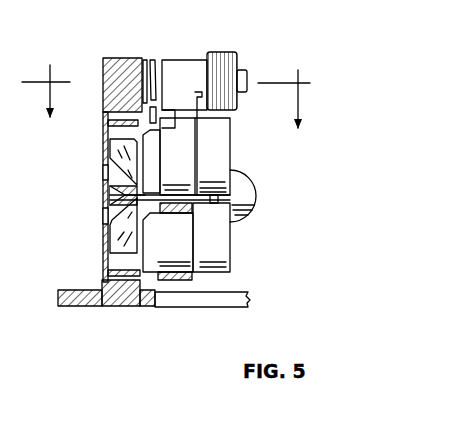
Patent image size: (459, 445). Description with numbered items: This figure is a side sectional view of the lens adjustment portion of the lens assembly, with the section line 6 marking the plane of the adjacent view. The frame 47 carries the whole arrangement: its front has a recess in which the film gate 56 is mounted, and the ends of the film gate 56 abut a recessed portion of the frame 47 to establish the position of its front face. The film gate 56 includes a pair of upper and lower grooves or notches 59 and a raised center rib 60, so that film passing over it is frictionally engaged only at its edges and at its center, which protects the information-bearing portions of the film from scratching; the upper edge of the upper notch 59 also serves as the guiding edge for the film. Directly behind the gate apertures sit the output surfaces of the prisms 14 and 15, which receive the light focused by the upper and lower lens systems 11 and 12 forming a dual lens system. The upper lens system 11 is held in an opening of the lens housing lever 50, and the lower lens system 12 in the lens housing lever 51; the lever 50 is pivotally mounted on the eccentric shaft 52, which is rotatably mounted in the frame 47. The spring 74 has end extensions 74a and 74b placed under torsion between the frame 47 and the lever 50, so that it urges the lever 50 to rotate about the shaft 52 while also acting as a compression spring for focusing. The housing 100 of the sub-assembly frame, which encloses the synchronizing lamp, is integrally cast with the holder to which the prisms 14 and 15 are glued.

The section line 6- 6 is at (173, 96).
The frame 47 is at (102, 58).
The film gate 56 is at (103, 128).
The prism 14 is at (112, 162).
The prism 15 is at (112, 231).
The raised center rib 60 is at (106, 198).
The grooves or notches 59 is at (103, 173).
The end extension 74a is at (143, 44).
The spring 74 is at (150, 63).
The end extension 74b is at (199, 100).
The eccentric shaft 52 is at (167, 60).
The lens housing lever 50 is at (200, 65).
The upper lens system 11 is at (232, 155).
The lower lens system 12 is at (232, 246).
The housing 100 is at (255, 186).
The lens housing lever 51 is at (176, 280).